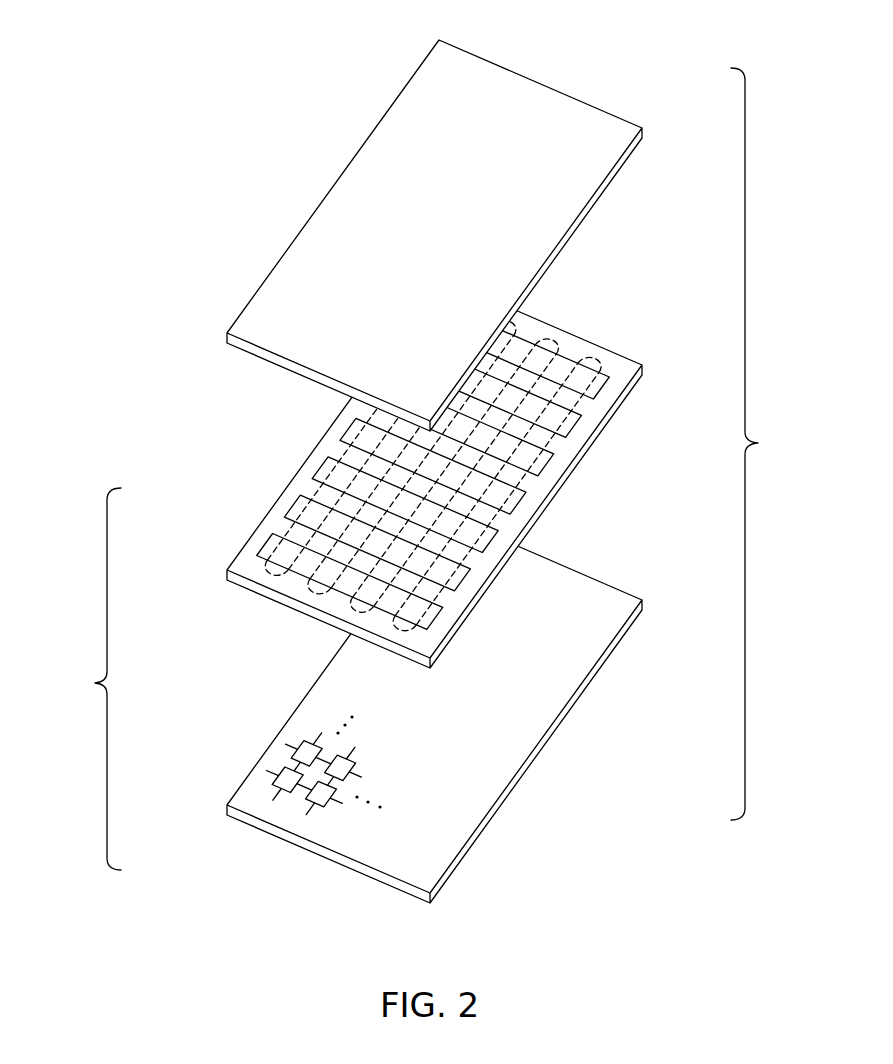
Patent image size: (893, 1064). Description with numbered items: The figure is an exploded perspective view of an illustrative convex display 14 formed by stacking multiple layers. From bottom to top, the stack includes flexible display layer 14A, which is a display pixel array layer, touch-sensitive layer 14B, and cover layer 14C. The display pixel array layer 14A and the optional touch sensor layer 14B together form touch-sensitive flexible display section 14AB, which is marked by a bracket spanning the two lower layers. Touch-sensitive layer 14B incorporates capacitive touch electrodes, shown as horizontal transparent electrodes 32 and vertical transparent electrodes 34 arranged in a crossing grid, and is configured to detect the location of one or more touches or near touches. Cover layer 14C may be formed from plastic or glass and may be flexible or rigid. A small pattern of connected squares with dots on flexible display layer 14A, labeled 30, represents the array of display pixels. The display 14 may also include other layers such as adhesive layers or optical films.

The convex display 14 is at (760, 444).
The flexible display layer 14A is at (250, 773).
The touch-sensitive layer 14B is at (250, 538).
The cover layer 14C is at (248, 298).
The touch-sensitive flexible display section 14AB is at (78, 679).
The pixels 30 is at (319, 806).
The horizontal transparent electrodes 32 is at (604, 386).
The vertical transparent electrodes 34 is at (592, 357).